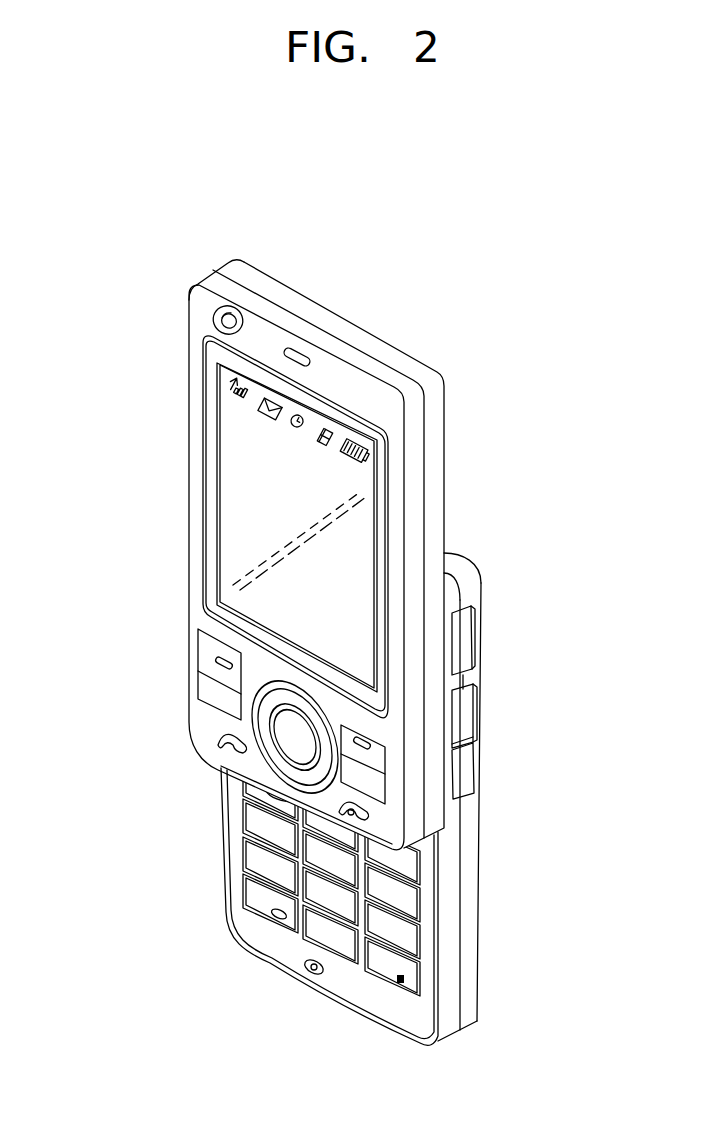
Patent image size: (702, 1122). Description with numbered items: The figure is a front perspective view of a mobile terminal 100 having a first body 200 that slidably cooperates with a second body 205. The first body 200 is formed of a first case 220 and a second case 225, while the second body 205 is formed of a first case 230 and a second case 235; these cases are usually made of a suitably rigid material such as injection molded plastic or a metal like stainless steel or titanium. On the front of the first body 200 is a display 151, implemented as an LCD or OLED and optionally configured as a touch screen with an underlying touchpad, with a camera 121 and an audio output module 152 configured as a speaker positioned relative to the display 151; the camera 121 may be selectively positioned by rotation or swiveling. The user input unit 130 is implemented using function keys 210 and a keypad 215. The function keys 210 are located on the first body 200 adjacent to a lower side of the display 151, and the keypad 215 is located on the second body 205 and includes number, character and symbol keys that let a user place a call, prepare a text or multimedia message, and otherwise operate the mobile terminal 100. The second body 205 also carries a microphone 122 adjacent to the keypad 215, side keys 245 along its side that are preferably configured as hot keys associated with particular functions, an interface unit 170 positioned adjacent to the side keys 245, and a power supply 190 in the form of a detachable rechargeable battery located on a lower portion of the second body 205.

The mobile terminal 100 is at (468, 294).
The first body 200 is at (155, 388).
The second body 205 is at (222, 978).
The first case 220 is at (413, 449).
The second case 225 is at (441, 425).
The first case 230 is at (460, 605).
The second case 235 is at (453, 565).
The camera 121 is at (226, 317).
The microphone 122 is at (312, 975).
The display 151 is at (233, 472).
The audio output module 152 is at (300, 350).
The user input unit 130 is at (98, 648).
The function keys 210 is at (210, 688).
The keypad 215 is at (248, 888).
The interface unit 170 is at (467, 640).
The side keys 245 is at (466, 771).
The power supply 190 is at (475, 920).